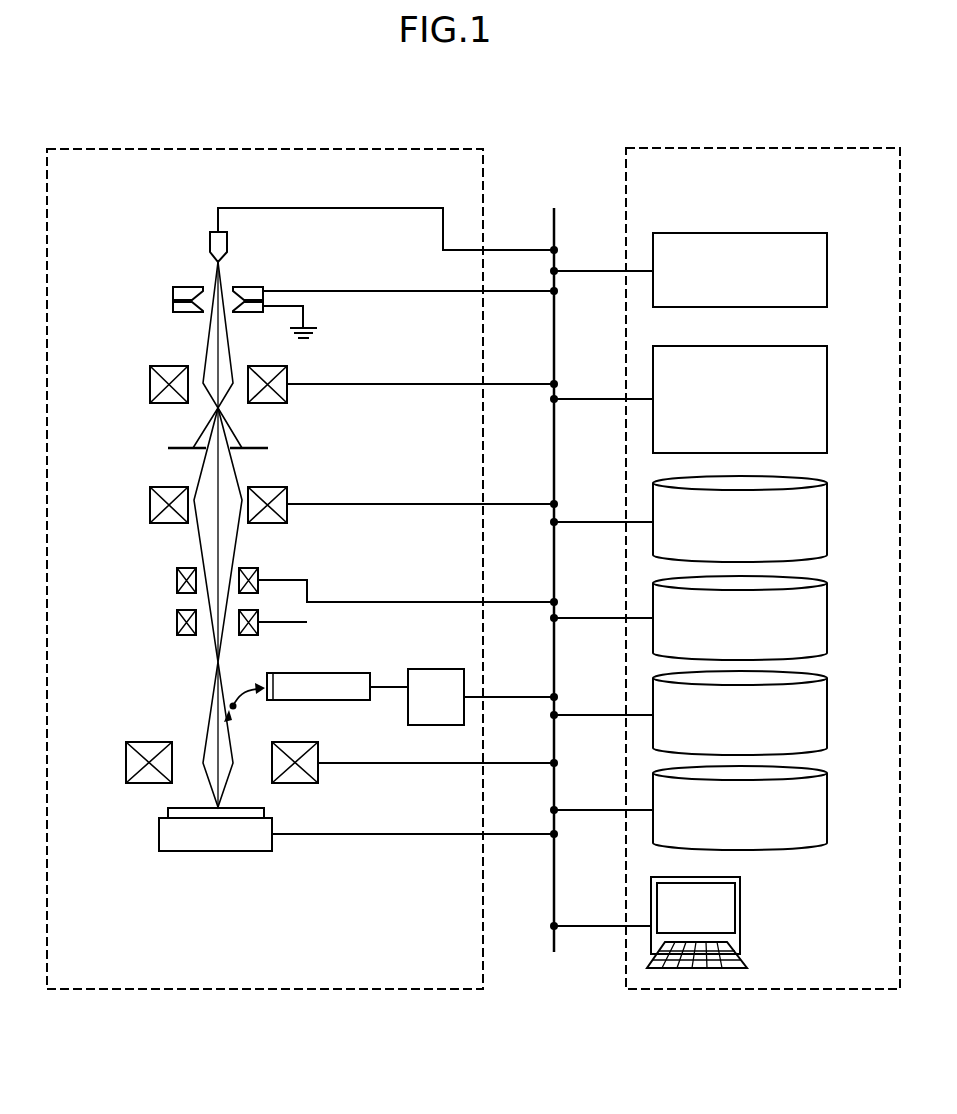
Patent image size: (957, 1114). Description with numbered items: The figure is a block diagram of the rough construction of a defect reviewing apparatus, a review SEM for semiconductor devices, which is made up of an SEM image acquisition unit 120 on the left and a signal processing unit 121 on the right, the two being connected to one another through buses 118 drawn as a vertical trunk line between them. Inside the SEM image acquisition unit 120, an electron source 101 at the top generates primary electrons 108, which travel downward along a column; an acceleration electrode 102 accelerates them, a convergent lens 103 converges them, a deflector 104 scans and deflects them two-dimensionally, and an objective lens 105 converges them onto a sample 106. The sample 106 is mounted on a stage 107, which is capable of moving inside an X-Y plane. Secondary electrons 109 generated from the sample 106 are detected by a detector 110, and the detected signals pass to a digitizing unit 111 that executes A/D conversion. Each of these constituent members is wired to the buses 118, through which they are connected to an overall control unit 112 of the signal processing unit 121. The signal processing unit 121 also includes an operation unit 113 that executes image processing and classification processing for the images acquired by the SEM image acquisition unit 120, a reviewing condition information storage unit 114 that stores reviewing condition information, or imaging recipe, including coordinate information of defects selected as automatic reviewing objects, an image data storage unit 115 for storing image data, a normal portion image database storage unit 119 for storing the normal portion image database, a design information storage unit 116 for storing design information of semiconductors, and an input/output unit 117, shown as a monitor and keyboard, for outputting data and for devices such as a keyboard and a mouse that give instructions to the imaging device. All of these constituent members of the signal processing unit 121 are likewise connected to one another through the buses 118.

The electron source 101 is at (208, 241).
The acceleration electrode 102 is at (170, 296).
The convergent lens 103 is at (150, 505).
The deflector 104 is at (176, 579).
The objective lens 105 is at (126, 765).
The sample 106 is at (167, 811).
The stage 107 is at (273, 846).
The primary electrons 108 is at (201, 546).
The secondary electrons 109 is at (234, 702).
The detector 110 is at (320, 672).
The digitizing unit 111 is at (437, 668).
The overall control unit 112 is at (829, 276).
The operation unit 113 is at (829, 401).
The reviewing condition information storage unit 114 is at (829, 524).
The image data storage unit 115 is at (829, 619).
The design information storage unit 116 is at (829, 811).
The input/output unit 117 is at (743, 917).
The buses 118 is at (556, 230).
The normal portion image database storage unit 119 is at (829, 714).
The SEM image acquisition unit 120 is at (268, 148).
The signal processing unit 121 is at (764, 148).